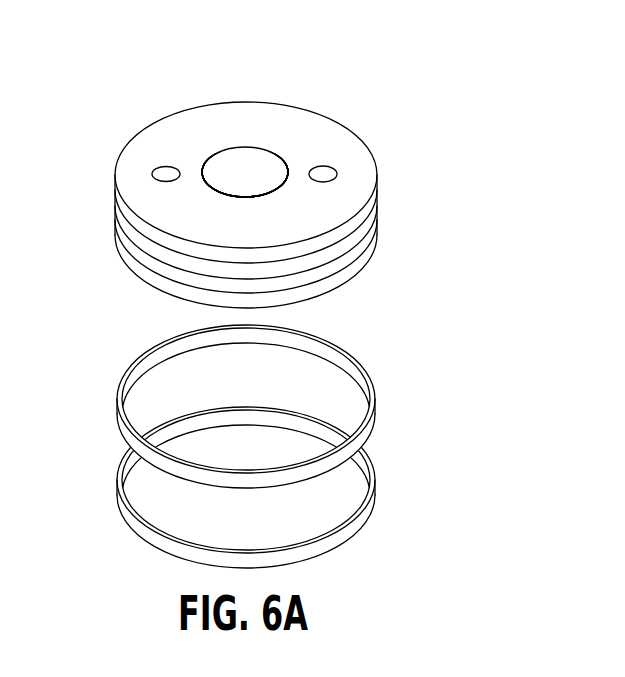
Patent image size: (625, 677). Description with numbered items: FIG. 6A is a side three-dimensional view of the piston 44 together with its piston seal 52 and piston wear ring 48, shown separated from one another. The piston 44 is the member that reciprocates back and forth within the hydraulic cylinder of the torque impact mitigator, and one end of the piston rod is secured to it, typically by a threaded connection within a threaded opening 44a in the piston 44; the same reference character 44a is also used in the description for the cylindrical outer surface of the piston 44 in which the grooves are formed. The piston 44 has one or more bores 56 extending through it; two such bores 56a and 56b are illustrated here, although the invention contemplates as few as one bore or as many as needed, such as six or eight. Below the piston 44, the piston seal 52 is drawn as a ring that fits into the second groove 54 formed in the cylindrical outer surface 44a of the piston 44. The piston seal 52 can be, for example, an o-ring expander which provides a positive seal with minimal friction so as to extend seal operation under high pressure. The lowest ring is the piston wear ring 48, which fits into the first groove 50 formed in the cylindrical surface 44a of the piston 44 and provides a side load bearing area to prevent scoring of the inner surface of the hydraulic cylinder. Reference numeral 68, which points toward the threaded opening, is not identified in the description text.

The piston 44 is at (280, 153).
The threaded opening 44a is at (235, 102).
The bores 56 is at (315, 160).
The bore 56a is at (167, 182).
The bore 56b is at (322, 181).
The second groove 54 is at (120, 208).
The first groove 50 is at (258, 165).
The internal threads 68 is at (246, 197).
The piston seal 52 is at (118, 394).
The piston wear ring 48 is at (362, 521).